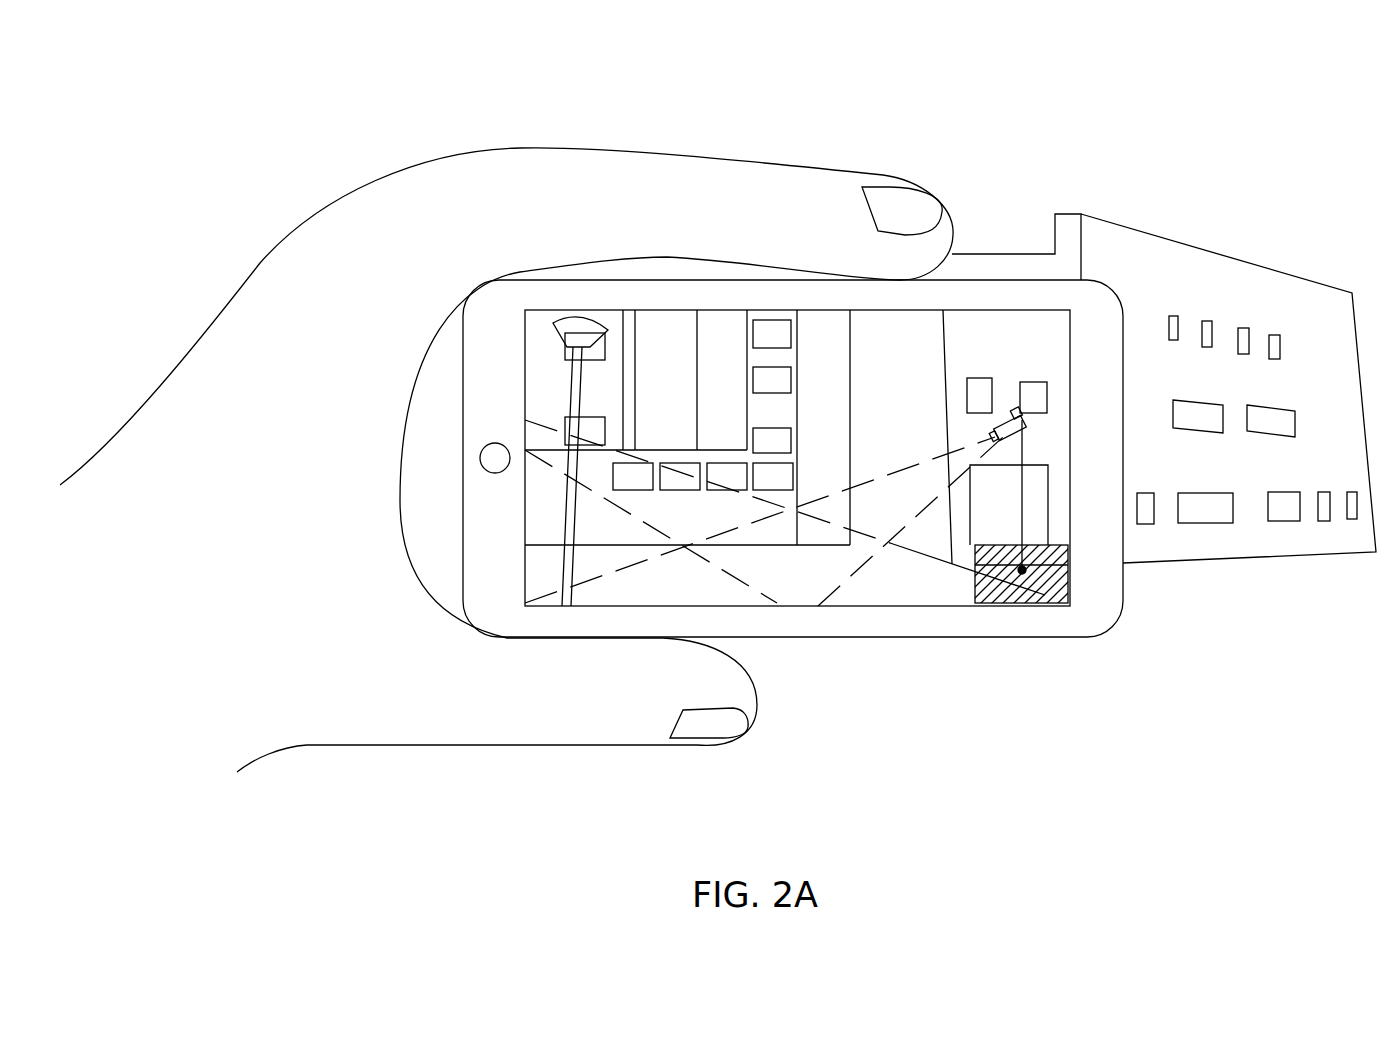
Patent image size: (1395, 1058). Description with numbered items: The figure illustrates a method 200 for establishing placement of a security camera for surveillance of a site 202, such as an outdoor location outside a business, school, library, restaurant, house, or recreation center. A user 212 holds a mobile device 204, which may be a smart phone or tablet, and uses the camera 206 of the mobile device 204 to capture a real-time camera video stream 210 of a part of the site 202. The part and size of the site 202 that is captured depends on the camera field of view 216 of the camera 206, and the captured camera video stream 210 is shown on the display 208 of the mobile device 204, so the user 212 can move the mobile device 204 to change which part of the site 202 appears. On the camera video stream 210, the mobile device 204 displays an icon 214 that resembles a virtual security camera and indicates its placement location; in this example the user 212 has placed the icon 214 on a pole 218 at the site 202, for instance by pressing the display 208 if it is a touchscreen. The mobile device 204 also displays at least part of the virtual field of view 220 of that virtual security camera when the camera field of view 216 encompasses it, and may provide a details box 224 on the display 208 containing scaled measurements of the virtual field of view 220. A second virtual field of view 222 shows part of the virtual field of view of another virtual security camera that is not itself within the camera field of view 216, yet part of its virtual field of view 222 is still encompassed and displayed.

The method 200 is at (372, 104).
The site 202 is at (1252, 218).
The mobile device 204 is at (1100, 622).
The camera 206 is at (490, 453).
The display 208 is at (1049, 328).
The camera video stream 210 is at (981, 328).
The user 212 is at (195, 342).
The icon 214 is at (1023, 425).
The camera field of view 216 is at (875, 593).
The pole 218 is at (1017, 498).
The virtual field of view 220 is at (900, 493).
The virtual field of view 222 is at (657, 513).
The details box 224 is at (1025, 600).